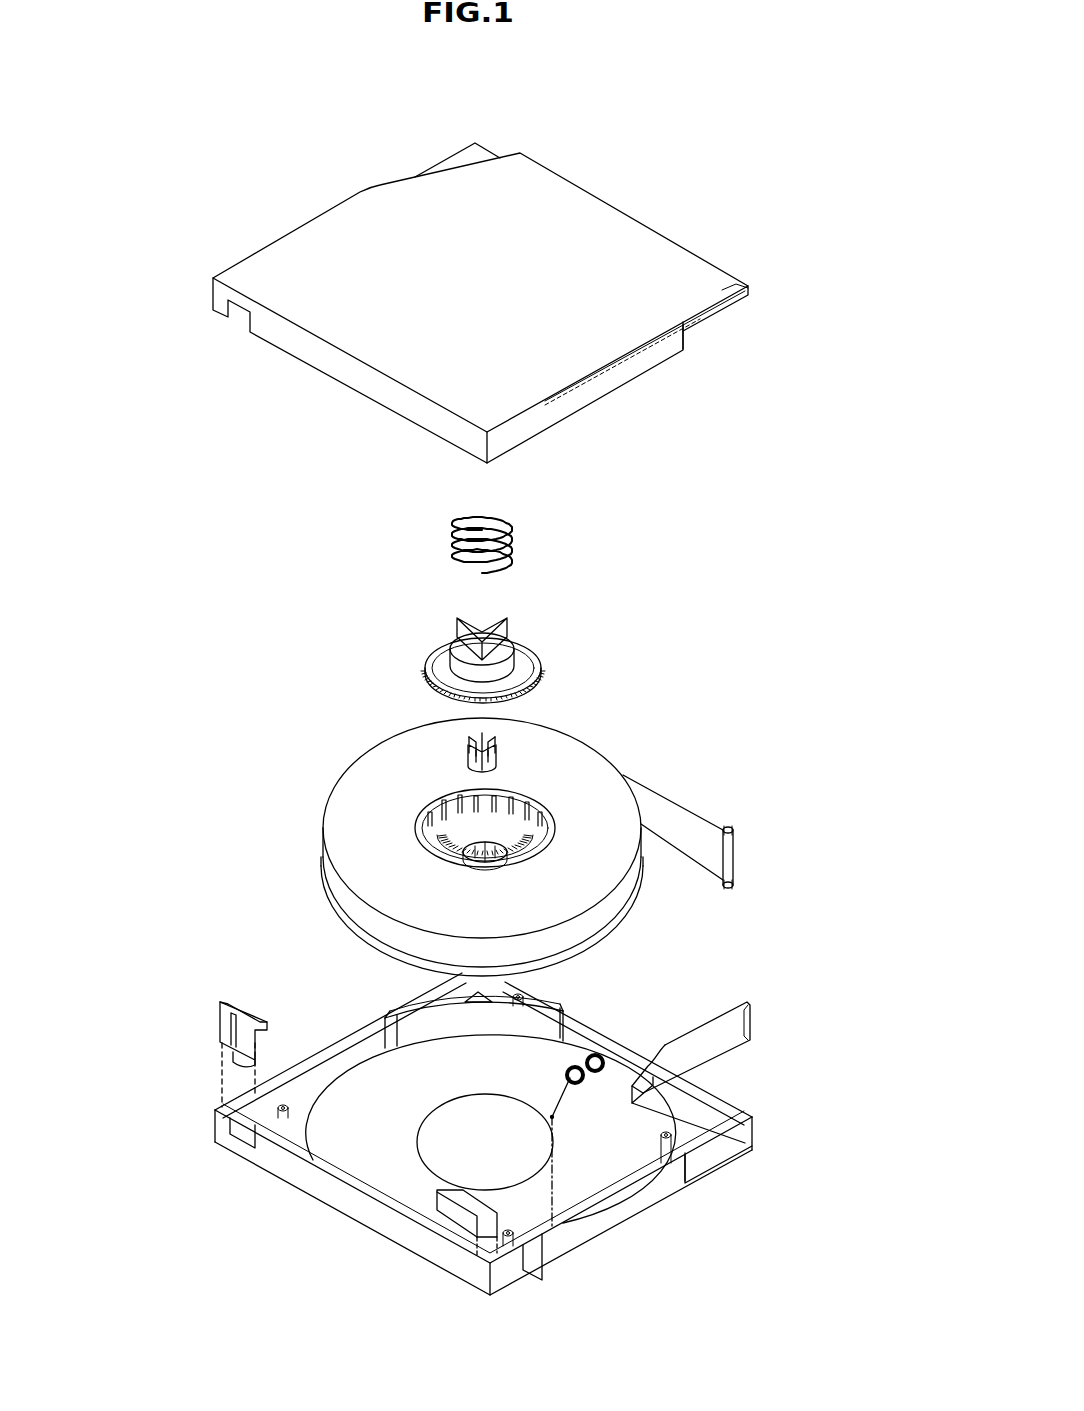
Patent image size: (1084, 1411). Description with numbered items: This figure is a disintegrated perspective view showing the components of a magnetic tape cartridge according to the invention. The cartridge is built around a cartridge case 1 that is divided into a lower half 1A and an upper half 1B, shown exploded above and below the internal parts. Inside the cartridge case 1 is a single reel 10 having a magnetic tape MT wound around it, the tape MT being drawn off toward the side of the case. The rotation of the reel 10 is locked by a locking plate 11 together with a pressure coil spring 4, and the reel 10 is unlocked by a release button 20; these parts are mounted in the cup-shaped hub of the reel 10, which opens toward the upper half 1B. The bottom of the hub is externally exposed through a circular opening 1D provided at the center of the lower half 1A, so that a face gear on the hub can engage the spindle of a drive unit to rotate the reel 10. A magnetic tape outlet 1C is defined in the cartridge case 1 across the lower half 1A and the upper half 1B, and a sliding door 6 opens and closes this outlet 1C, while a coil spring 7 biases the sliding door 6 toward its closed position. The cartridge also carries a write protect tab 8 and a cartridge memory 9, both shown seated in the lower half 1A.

The cartridge case 1 is at (236, 590).
The lower half 1A is at (338, 1037).
The upper half 1B is at (363, 397).
The magnetic tape outlet 1C is at (687, 333).
The circular opening 1D is at (430, 1167).
The pressure coil spring 4 is at (513, 537).
The sliding door 6 is at (723, 1010).
The coil spring 7 is at (605, 1058).
The write protect tab 8 is at (223, 1002).
The cartridge memory 9 is at (460, 1205).
The reel 10 is at (598, 755).
The locking plate 11 is at (547, 663).
The release button 20 is at (508, 755).
The magnetic tape MT is at (688, 810).